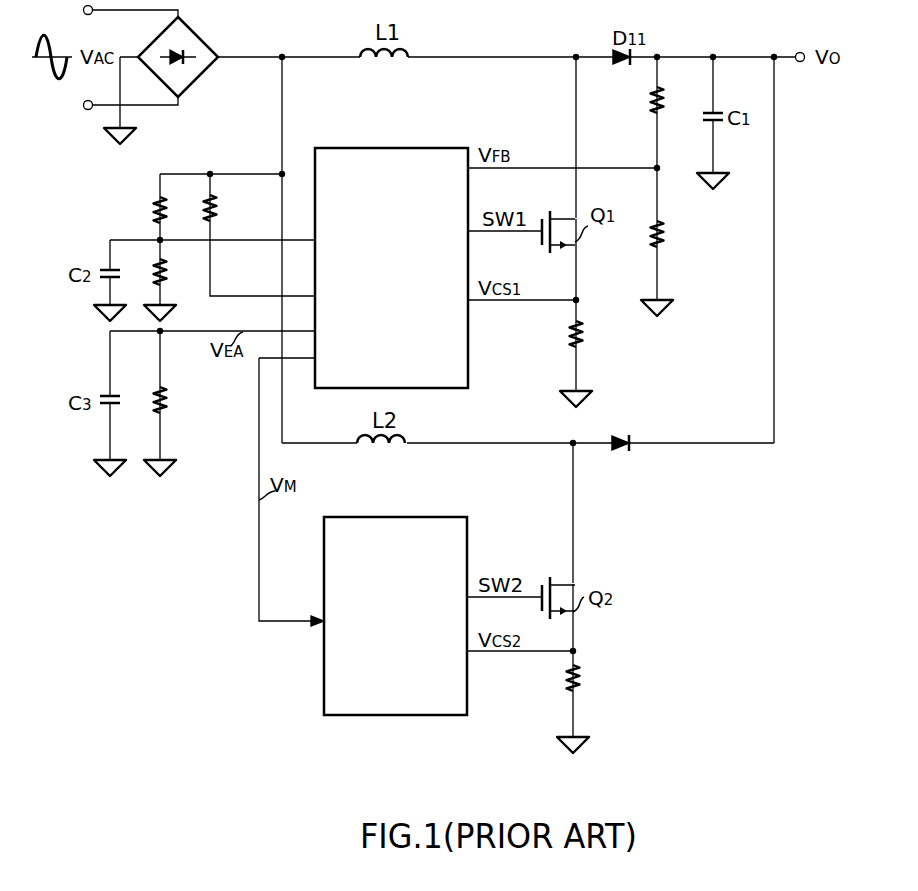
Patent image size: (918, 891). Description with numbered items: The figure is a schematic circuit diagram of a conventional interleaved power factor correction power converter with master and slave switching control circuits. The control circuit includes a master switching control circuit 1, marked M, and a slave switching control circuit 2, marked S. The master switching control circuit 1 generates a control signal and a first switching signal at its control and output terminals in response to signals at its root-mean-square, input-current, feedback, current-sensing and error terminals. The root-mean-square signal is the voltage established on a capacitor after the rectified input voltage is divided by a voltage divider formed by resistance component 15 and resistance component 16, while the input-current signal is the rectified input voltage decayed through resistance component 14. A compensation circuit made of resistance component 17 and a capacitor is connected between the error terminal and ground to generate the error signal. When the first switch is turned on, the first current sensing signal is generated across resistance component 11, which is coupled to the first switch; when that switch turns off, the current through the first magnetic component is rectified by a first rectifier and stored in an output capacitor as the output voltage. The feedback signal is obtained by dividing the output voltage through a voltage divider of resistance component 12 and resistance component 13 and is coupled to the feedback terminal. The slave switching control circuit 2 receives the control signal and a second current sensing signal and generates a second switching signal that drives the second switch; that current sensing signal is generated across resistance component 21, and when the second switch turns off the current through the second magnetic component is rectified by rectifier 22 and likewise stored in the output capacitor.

The master switching control circuit 1 is at (391, 254).
The slave switching control circuit 2 is at (395, 604).
The resistance component R11 11 is at (595, 334).
The resistance component R12 12 is at (676, 101).
The resistance component R13 13 is at (676, 234).
The resistance component R14 14 is at (229, 209).
The resistance component R15 15 is at (179, 210).
The resistance component R16 16 is at (179, 272).
The resistance component R17 17 is at (180, 401).
The resistance component R21 21 is at (593, 679).
The rectifier D22 22 is at (627, 431).